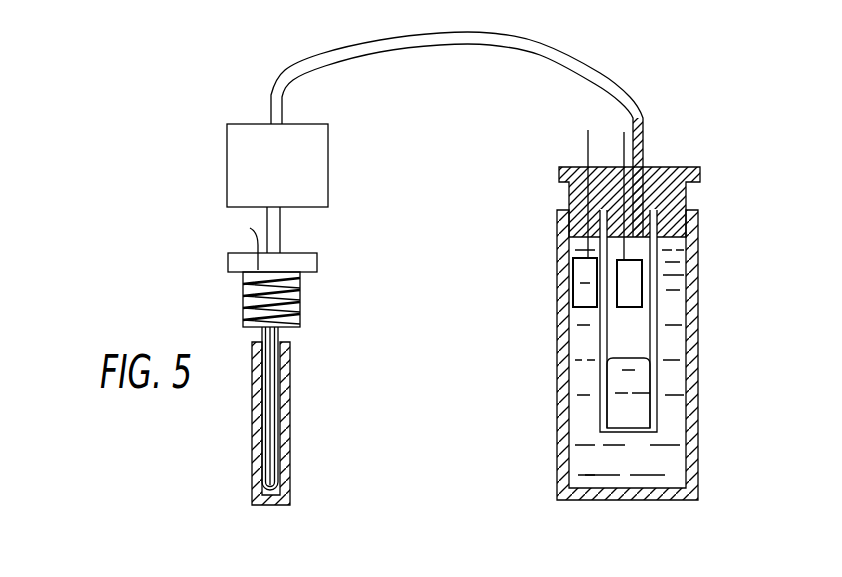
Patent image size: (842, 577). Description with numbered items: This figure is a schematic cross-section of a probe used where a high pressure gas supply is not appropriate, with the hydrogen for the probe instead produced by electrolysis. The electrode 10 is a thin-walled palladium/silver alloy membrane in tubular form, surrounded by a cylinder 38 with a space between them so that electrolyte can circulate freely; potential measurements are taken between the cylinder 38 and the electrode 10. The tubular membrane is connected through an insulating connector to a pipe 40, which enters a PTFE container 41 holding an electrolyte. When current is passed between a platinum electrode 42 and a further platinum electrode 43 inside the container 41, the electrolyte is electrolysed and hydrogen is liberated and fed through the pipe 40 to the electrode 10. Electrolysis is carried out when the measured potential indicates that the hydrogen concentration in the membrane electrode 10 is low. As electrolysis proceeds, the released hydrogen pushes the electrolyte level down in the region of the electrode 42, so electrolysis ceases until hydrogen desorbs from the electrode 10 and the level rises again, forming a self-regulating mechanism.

The electrode 10 is at (271, 380).
The cylinder 38 is at (290, 446).
The pipe 40 is at (481, 52).
The PTFE container 41 is at (557, 413).
The platinum electrode 42 is at (630, 290).
The further platinum electrode 43 is at (585, 285).